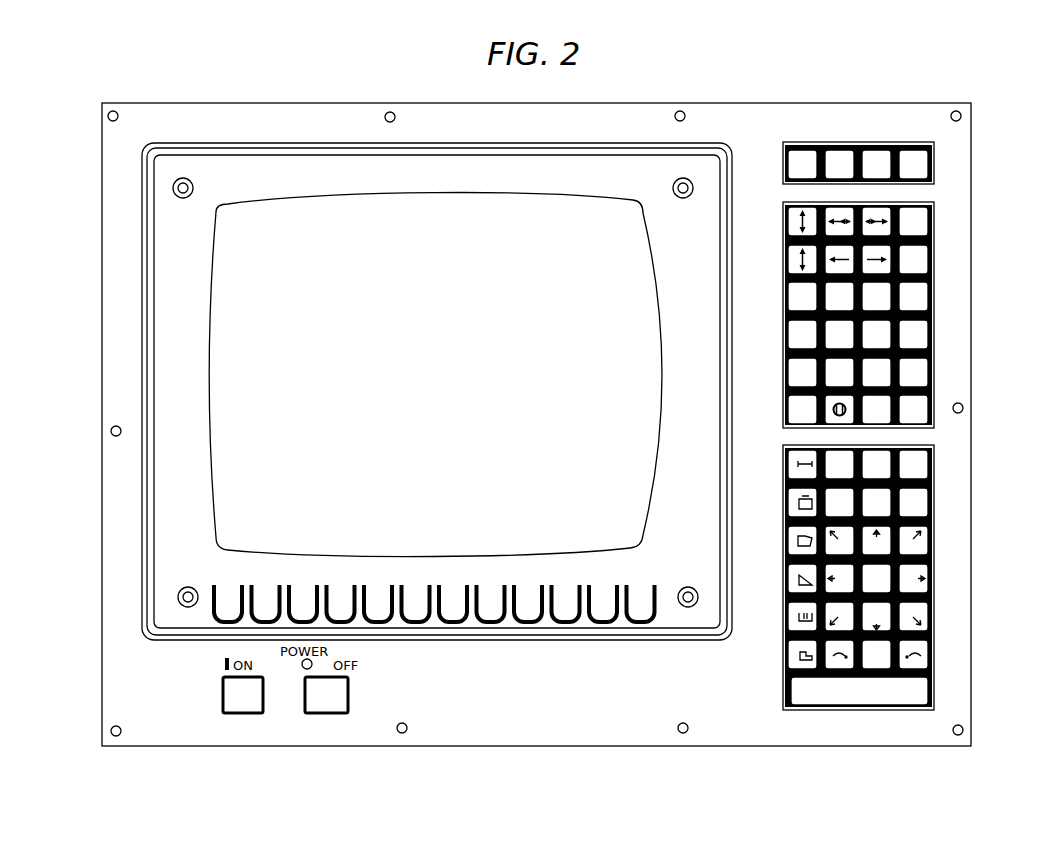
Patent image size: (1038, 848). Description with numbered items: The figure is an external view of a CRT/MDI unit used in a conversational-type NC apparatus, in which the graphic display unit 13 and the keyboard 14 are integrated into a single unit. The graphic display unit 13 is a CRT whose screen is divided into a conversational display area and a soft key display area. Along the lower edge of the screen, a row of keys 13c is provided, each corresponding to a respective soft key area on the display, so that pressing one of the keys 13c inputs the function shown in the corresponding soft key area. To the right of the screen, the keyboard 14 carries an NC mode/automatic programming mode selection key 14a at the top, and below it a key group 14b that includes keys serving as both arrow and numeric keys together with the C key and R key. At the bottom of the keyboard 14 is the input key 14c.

The graphic display unit 13 is at (230, 520).
The keys 13c is at (222, 612).
The keyboard 14 is at (943, 337).
The NC mode/automatic programming mode selection key 14a is at (882, 143).
The key group 14b is at (942, 547).
The input key 14c is at (920, 688).